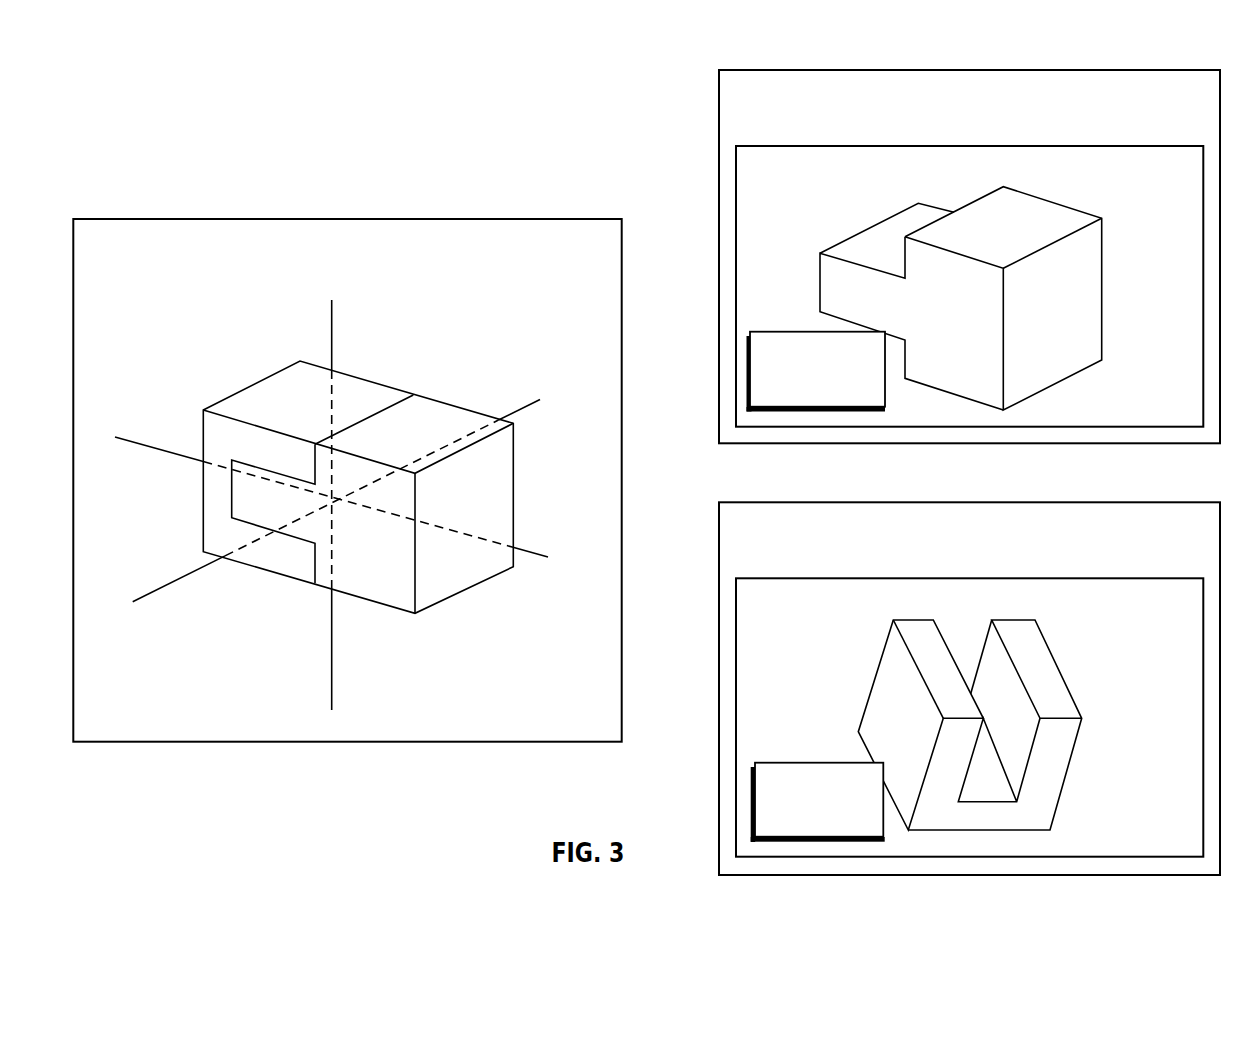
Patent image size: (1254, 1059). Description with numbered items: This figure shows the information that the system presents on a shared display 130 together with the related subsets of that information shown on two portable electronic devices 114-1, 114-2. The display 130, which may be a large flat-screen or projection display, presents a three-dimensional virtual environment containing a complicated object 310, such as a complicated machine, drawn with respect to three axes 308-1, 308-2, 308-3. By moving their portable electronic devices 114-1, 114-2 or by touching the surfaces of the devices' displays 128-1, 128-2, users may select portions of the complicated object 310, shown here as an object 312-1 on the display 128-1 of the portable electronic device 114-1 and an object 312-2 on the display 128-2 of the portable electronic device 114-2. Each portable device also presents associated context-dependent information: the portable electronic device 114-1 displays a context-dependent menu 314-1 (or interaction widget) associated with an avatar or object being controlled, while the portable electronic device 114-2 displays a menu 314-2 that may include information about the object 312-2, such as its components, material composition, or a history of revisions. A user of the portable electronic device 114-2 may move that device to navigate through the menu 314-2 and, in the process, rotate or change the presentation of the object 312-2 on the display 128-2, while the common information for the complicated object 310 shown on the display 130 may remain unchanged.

The display 130 is at (395, 218).
The complicated object 310 is at (247, 388).
The axis 308-1 is at (332, 313).
The axis 308-2 is at (502, 413).
The axis 308-3 is at (515, 554).
The portable electronic device 114-1 is at (760, 70).
The portable electronic device 114-2 is at (760, 502).
The display 128-1 is at (742, 147).
The display 128-2 is at (742, 578).
The object 312-1 is at (1072, 207).
The object 312-2 is at (1062, 672).
The context-dependent menu 314-1 is at (783, 333).
The menu 314-2 is at (778, 763).